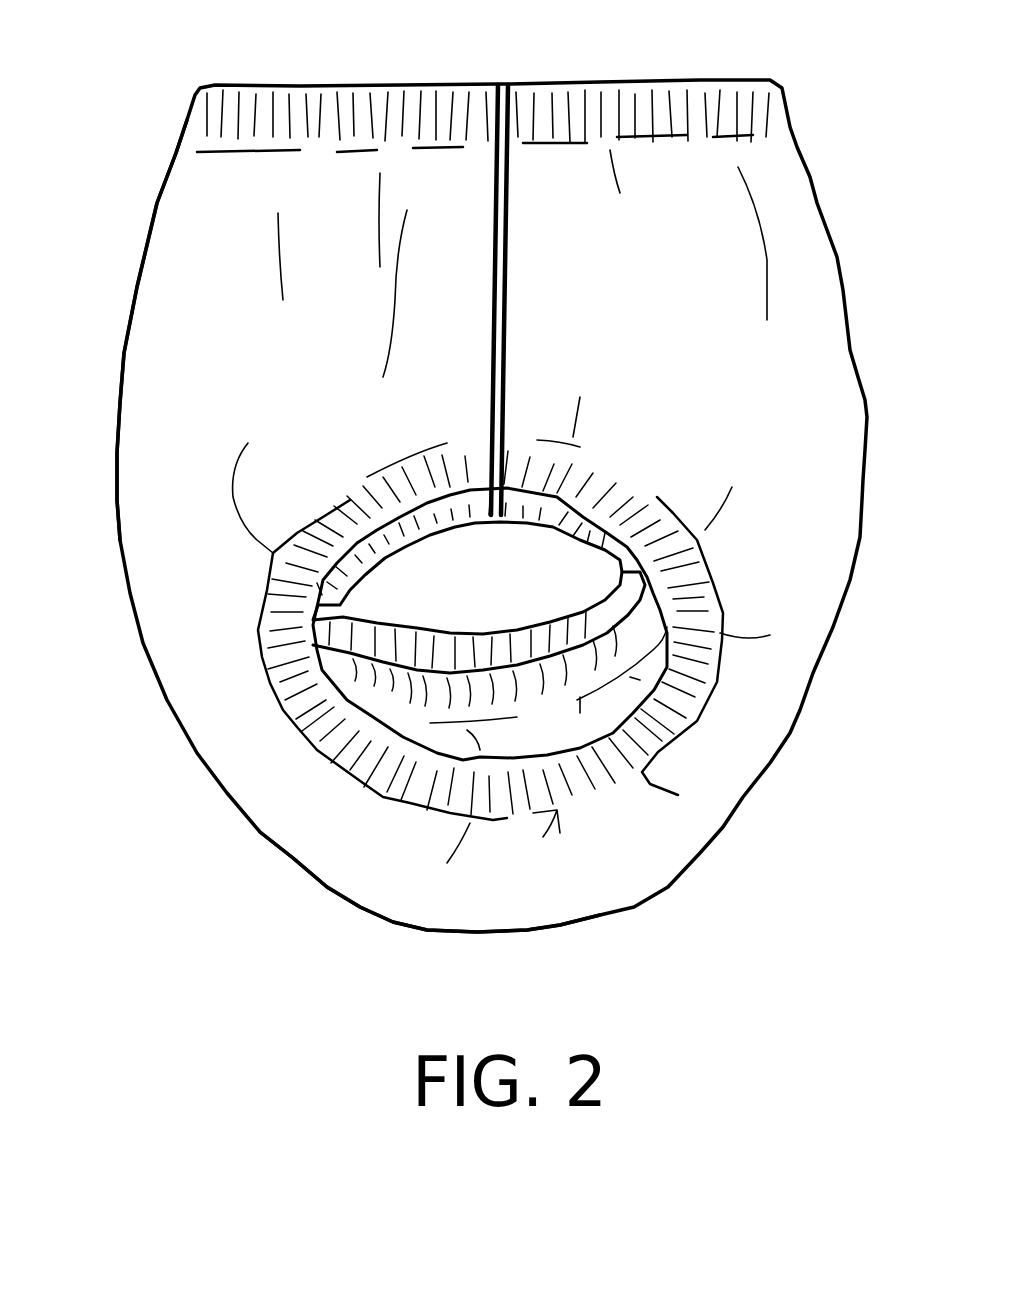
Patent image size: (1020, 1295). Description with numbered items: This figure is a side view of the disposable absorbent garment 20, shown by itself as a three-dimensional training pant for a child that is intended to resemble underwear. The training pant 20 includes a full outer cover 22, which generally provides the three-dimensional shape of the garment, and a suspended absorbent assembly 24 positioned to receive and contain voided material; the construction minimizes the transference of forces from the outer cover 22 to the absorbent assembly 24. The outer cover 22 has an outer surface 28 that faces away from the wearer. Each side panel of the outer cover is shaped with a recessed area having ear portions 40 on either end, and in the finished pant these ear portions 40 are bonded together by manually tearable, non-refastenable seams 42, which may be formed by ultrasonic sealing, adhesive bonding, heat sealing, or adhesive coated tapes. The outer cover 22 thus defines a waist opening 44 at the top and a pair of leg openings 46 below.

The disposable absorbent garment 20 is at (107, 253).
The outer cover 22 is at (180, 373).
The absorbent assembly 24 is at (372, 704).
The outer surface 28 is at (347, 838).
The ear portions 40 is at (473, 267).
The seams 42 is at (507, 290).
The waist opening 44 is at (632, 78).
The leg openings 46 is at (658, 596).